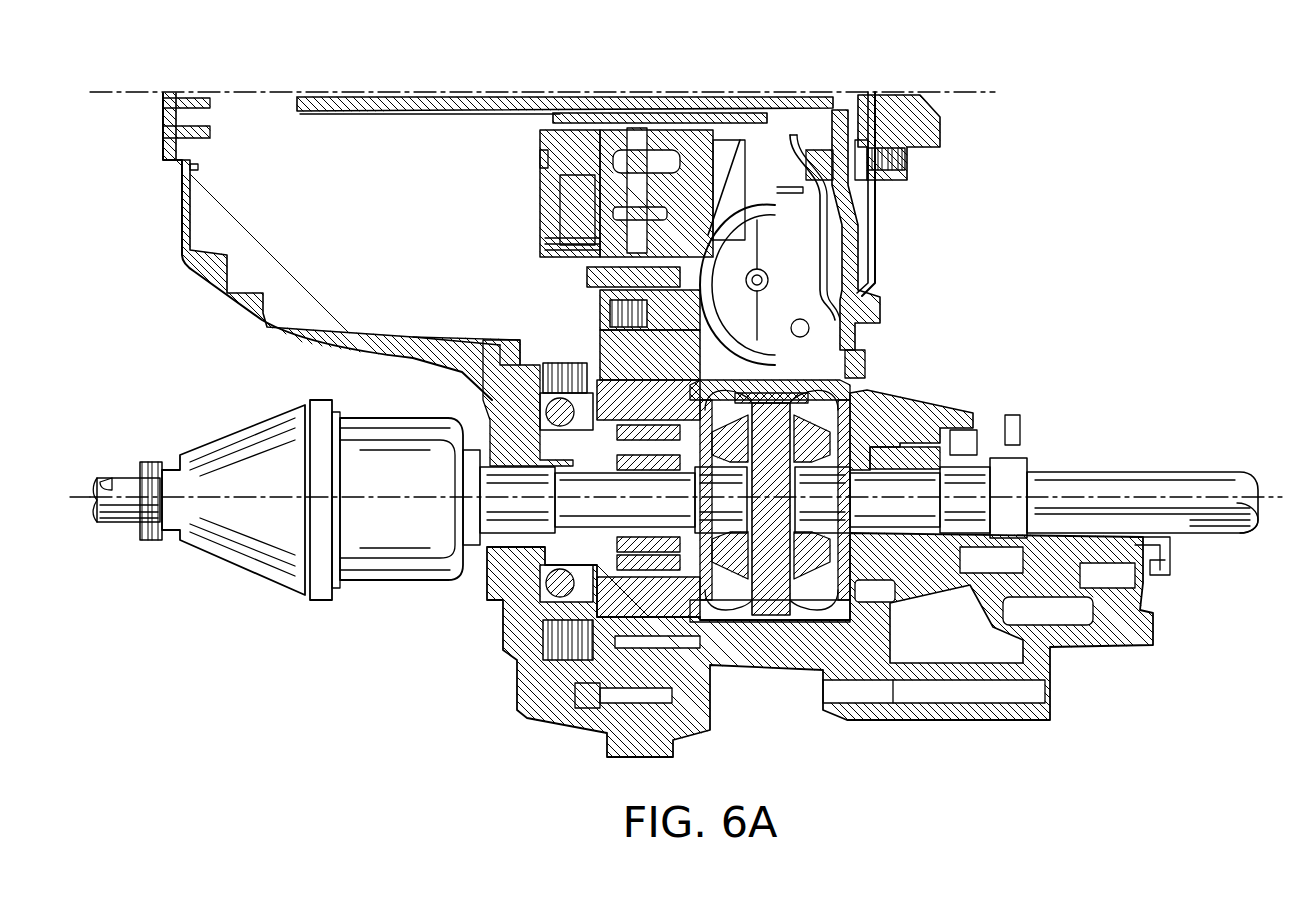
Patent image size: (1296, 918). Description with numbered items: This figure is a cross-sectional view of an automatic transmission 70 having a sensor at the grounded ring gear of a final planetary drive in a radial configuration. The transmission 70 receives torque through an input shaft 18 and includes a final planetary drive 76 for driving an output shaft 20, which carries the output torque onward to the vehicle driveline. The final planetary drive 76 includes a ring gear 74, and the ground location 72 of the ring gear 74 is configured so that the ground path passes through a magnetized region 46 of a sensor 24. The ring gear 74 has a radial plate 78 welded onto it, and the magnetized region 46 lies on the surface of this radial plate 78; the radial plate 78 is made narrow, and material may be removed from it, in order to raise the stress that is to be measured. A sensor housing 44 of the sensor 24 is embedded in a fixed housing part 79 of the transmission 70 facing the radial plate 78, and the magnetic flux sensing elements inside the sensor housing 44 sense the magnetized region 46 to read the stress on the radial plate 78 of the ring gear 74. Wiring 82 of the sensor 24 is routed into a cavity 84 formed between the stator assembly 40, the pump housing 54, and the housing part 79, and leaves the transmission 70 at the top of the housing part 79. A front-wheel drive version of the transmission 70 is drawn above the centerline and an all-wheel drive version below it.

The automatic transmission 70 is at (999, 42).
The input shaft 18 is at (672, 103).
The output shaft 20 is at (1098, 480).
The sensor 24 is at (578, 305).
The stator assembly 40 is at (680, 200).
The sensor housing 44 is at (607, 325).
The magnetized region 46 is at (596, 318).
The pump housing 54 is at (608, 195).
The ground location 72 is at (600, 262).
The ring gear 74 is at (620, 338).
The final planetary drive 76 is at (620, 607).
The radial plate 78 is at (610, 282).
The housing part 79 is at (600, 258).
The wiring 82 is at (545, 168).
The cavity 84 is at (633, 230).